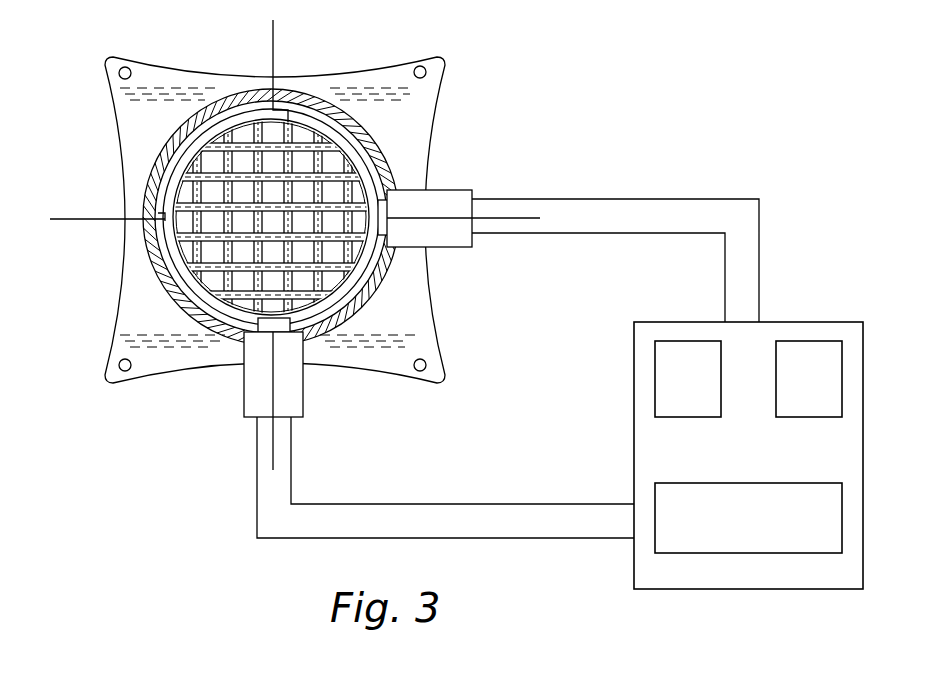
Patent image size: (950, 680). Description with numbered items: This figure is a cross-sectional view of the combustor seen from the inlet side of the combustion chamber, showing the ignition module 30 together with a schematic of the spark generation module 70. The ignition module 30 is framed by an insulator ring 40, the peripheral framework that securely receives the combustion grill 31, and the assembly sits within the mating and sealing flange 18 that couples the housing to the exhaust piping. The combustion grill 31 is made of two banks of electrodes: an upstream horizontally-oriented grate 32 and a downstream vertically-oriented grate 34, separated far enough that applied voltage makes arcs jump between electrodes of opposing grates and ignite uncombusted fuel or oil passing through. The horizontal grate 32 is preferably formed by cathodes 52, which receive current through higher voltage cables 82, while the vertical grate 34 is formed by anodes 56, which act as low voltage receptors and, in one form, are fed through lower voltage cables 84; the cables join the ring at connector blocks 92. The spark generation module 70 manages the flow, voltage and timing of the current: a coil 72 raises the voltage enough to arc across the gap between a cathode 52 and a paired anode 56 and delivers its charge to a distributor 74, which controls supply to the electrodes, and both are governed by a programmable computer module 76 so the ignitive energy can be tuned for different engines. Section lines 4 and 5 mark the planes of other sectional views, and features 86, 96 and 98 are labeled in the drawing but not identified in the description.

The section line 4- 4 is at (285, 30).
The section line 5- 5 is at (60, 215).
The mating and sealing flange 18 is at (113, 112).
The ignition module 30 is at (314, 116).
The combustion grill 31 is at (244, 216).
The upstream horizontally-oriented grate 32 is at (390, 163).
The downstream vertically-oriented grate 34 is at (362, 282).
The insulator ring 40 is at (215, 127).
The cathodes 52 is at (220, 175).
The anodes 56 is at (272, 217).
The spark generation module 70 is at (744, 449).
The coil 72 is at (655, 387).
The distributor 74 is at (842, 390).
The programmable computer module 76 is at (742, 553).
The higher voltage cables 82 is at (627, 199).
The lower voltage cables 84 is at (257, 512).
The cover plate 86 is at (330, 137).
The connector 92 is at (442, 247).
The seal 96 is at (388, 150).
The housing base 98 is at (205, 337).